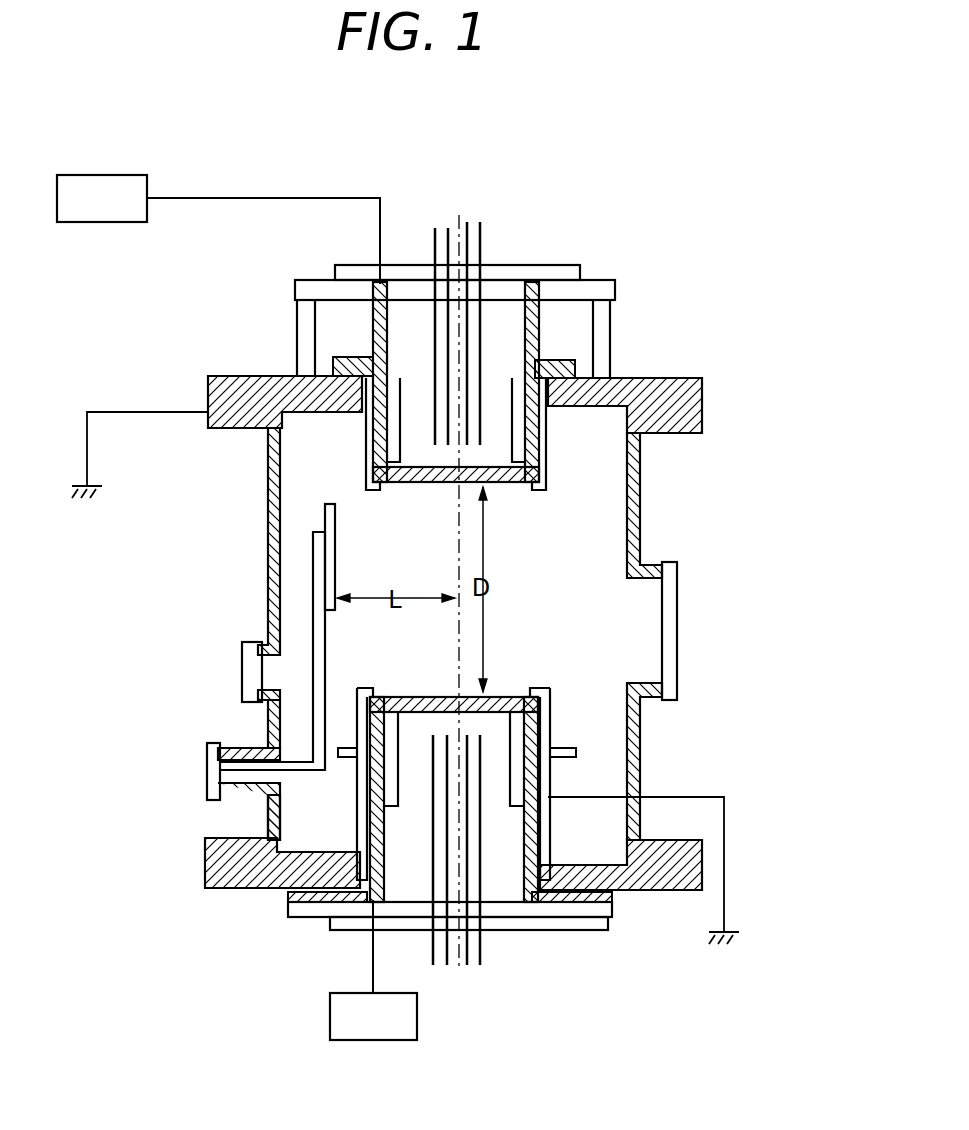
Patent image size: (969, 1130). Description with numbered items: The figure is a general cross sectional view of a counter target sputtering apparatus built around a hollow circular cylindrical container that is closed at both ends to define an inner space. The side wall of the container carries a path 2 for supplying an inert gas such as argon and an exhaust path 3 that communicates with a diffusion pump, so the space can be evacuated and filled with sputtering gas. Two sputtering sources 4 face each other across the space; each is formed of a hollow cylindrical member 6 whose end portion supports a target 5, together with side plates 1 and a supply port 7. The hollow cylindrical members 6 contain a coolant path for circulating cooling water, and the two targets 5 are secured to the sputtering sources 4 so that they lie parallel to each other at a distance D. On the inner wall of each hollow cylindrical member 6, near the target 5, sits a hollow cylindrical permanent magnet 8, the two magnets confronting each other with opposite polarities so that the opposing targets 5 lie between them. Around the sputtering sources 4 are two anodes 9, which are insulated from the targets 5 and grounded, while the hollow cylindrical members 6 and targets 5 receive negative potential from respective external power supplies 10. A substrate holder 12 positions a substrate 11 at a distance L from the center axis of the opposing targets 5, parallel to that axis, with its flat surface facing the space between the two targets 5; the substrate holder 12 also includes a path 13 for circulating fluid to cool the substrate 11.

The side plates 1 is at (702, 390).
The path 2 is at (242, 680).
The exhaust path 3 is at (677, 570).
The sputtering sources 4 is at (598, 282).
The targets 5 is at (488, 484).
The hollow cylindrical members 6 is at (538, 332).
The supply port 7 is at (484, 241).
The hollow cylindrical permanent magnet 8 is at (400, 442).
The anodes 9 is at (366, 466).
The external power supplies 10 is at (147, 184).
The substrate 11 is at (335, 520).
The substrate holder 12 is at (313, 545).
The path 13 is at (235, 768).